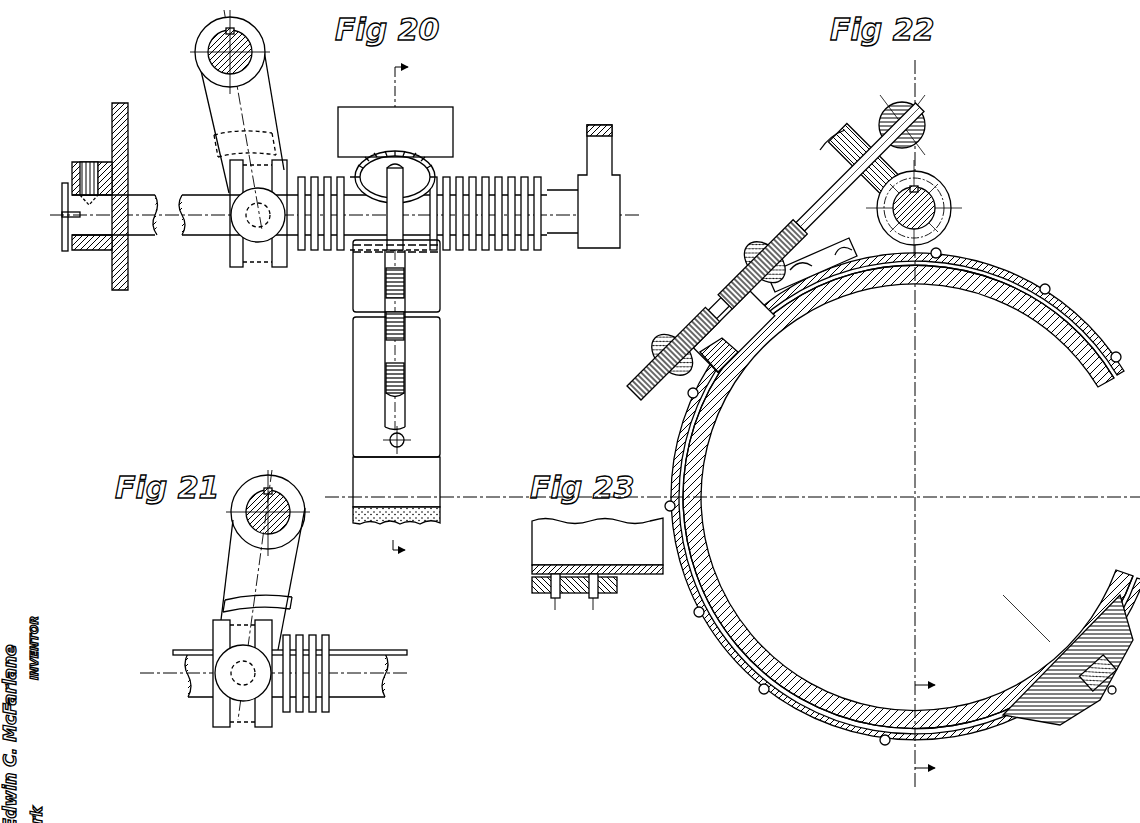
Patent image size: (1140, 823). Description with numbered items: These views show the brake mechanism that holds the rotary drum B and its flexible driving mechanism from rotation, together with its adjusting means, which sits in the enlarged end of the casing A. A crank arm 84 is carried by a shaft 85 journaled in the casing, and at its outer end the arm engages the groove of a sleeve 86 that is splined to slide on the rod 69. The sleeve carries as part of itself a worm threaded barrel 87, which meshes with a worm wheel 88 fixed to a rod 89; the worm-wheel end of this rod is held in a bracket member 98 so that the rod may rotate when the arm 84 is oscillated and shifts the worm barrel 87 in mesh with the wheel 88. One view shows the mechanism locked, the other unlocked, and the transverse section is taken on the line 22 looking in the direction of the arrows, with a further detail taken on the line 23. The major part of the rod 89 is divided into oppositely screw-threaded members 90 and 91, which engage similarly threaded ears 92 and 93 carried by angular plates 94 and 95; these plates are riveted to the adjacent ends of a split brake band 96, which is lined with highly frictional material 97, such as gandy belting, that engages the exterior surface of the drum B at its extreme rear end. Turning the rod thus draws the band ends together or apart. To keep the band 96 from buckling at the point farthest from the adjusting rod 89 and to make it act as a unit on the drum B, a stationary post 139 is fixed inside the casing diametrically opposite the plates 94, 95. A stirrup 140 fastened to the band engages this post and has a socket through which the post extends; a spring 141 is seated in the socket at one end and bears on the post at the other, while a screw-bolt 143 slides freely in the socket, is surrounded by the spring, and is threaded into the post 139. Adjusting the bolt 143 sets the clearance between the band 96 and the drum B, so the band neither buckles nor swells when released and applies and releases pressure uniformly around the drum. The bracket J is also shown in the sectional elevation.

In FIG. 20, the casing A is at (112, 110).
In FIG. 20, the bracket J is at (604, 140).
In FIG. 23, the rotary drum B is at (550, 542).
In FIG. 22, the rotary drum B is at (836, 300).
In FIG. 20, the rod 69 is at (186, 232).
In FIG. 21, the rod 69 is at (368, 688).
In FIG. 22, the rod 69 is at (936, 200).
In FIG. 20, the crank arm 84 is at (254, 100).
In FIG. 21, the crank arm 84 is at (282, 572).
In FIG. 20, the shaft 85 is at (218, 60).
In FIG. 21, the shaft 85 is at (250, 527).
In FIG. 20, the sleeve 86 is at (235, 252).
In FIG. 21, the sleeve 86 is at (264, 726).
In FIG. 20, the worm threaded barrel 87 is at (488, 180).
In FIG. 21, the worm threaded barrel 87 is at (318, 640).
In FIG. 22, the worm threaded barrel 87 is at (952, 215).
In FIG. 20, the worm wheel 88 is at (420, 158).
In FIG. 22, the worm wheel 88 is at (840, 140).
In FIG. 20, the rod 89 is at (400, 200).
In FIG. 22, the rod 89 is at (832, 195).
In FIG. 20, the screw-threaded member 90 is at (385, 287).
In FIG. 22, the screw-threaded member 90 is at (742, 280).
In FIG. 20, the screw-threaded member 91 is at (405, 380).
In FIG. 22, the screw-threaded member 91 is at (703, 318).
In FIG. 20, the threaded ear 92 is at (385, 253).
In FIG. 22, the threaded ear 92 is at (765, 245).
In FIG. 20, the threaded ear 93 is at (385, 350).
In FIG. 22, the threaded ear 93 is at (655, 354).
In FIG. 20, the angular plate 94 is at (425, 298).
In FIG. 22, the angular plate 94 is at (800, 262).
In FIG. 20, the angular plate 95 is at (425, 397).
In FIG. 22, the angular plate 95 is at (705, 366).
In FIG. 20, the split brake band 96 is at (425, 487).
In FIG. 23, the split brake band 96 is at (587, 600).
In FIG. 22, the split brake band 96 is at (690, 628).
In FIG. 20, the frictional lining 97 is at (440, 518).
In FIG. 23, the frictional lining 97 is at (534, 570).
In FIG. 22, the frictional lining 97 is at (700, 552).
In FIG. 20, the bracket member 98 is at (440, 110).
In FIG. 22, the bracket member 98 is at (926, 127).
In FIG. 20, the section line 22— 22 is at (416, 82).
In FIG. 21, the section line 22— 22 is at (414, 551).
In FIG. 22, the section line 23— 23 is at (940, 728).
In FIG. 22, the stationary member or post 139 is at (1080, 682).
In FIG. 22, the stirrup 140 is at (1108, 615).
In FIG. 22, the spring 141 is at (1080, 650).
In FIG. 22, the screw-bolt 143 is at (1105, 700).